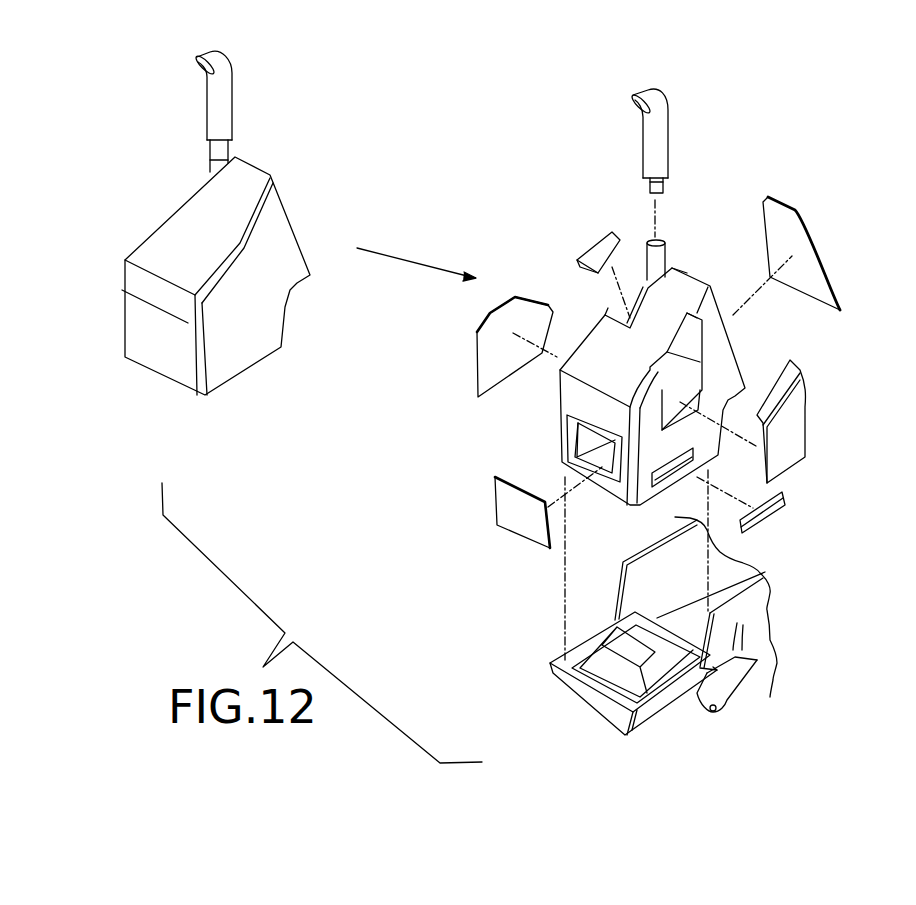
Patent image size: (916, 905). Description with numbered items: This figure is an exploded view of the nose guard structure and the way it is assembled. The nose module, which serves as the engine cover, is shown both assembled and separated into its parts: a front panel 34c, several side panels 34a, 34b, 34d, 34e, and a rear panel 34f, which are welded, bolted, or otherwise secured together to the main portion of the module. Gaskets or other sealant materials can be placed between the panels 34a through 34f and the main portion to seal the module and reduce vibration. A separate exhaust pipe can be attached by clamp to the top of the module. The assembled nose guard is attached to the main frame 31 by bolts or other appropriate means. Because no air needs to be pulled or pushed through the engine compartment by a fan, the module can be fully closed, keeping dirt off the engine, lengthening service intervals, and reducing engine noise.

The main frame 31 is at (660, 707).
The side panel 34a is at (515, 313).
The side panel 34b is at (598, 250).
The front panel 34c is at (515, 520).
The side panel 34d is at (797, 418).
The side panel 34e is at (772, 508).
The rear panel 34f is at (802, 240).